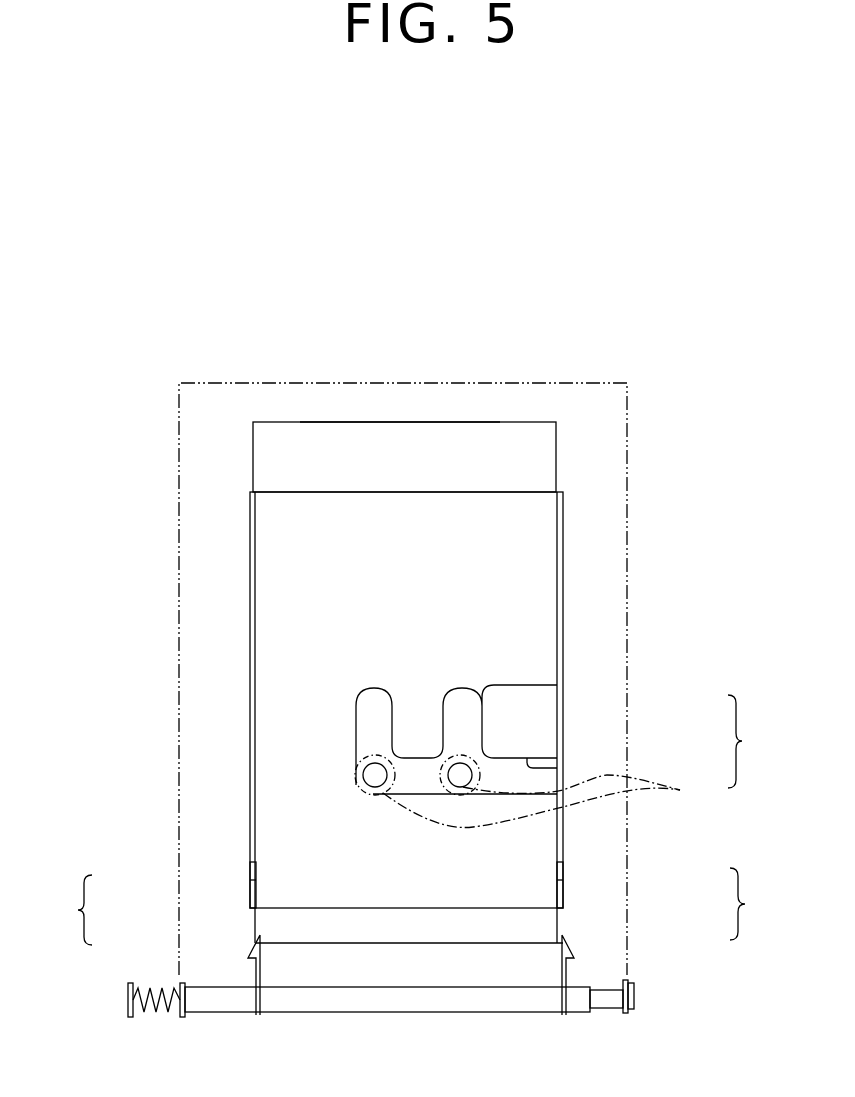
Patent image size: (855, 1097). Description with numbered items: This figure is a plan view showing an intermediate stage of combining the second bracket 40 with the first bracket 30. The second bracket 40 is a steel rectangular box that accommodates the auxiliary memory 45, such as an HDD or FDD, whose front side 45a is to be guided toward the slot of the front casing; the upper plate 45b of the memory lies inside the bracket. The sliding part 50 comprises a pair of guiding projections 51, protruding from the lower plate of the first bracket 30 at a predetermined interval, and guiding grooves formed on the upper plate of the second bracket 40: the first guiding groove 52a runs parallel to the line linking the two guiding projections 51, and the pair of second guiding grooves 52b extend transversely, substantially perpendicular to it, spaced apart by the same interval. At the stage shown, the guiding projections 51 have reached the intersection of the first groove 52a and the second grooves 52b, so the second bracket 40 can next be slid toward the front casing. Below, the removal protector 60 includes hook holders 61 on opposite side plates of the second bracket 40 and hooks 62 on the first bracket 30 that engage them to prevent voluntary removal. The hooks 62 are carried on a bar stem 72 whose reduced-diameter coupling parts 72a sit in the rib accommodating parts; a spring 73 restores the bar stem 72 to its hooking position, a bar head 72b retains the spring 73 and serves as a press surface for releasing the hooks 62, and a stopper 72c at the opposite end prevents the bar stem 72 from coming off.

The first bracket 30 is at (627, 580).
The second bracket 40 is at (250, 653).
The auxiliary memory 45 is at (253, 453).
The front side of the auxiliary memory 45a is at (463, 943).
The upper plate 45b is at (383, 422).
The sliding part 50 is at (777, 758).
The guiding projections 51 is at (543, 801).
The first guiding groove 52a is at (540, 768).
The second guiding grooves 52b is at (393, 704).
The removal protector 60 is at (75, 921).
The hook holders 61 is at (250, 878).
The hooks 62 is at (248, 950).
The bar stem 72 is at (357, 1012).
The coupling parts 72a is at (178, 1020).
The bar head 72b is at (130, 1020).
The stopper 72c is at (633, 1012).
The spring 73 is at (162, 1020).